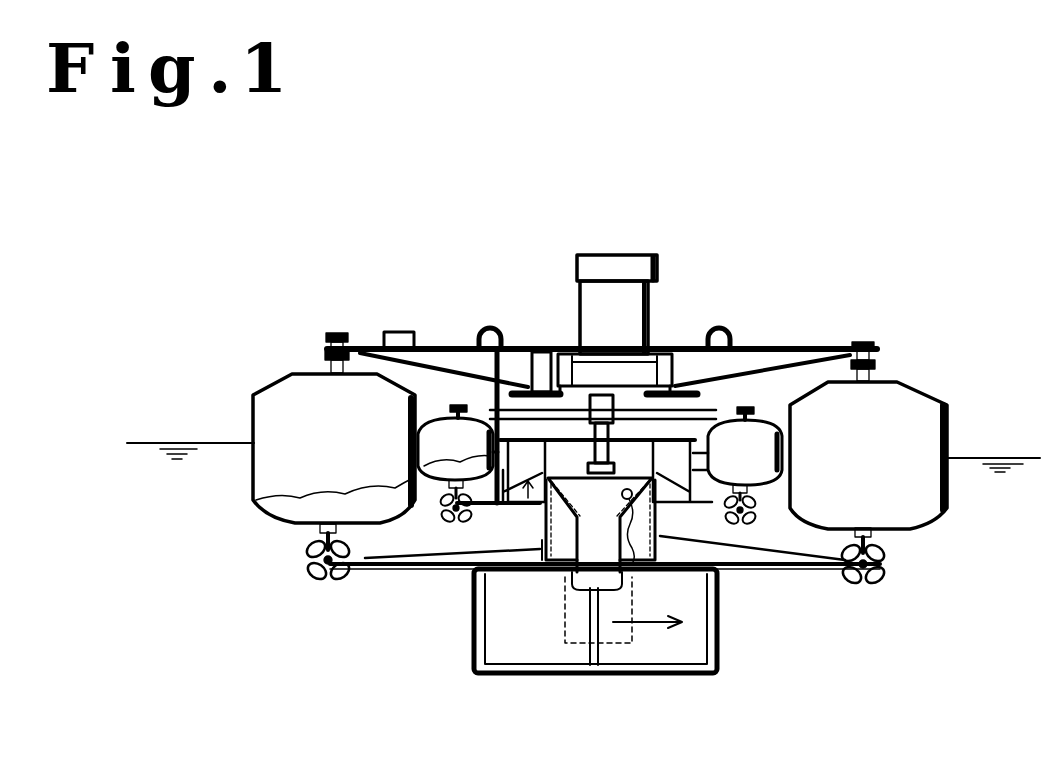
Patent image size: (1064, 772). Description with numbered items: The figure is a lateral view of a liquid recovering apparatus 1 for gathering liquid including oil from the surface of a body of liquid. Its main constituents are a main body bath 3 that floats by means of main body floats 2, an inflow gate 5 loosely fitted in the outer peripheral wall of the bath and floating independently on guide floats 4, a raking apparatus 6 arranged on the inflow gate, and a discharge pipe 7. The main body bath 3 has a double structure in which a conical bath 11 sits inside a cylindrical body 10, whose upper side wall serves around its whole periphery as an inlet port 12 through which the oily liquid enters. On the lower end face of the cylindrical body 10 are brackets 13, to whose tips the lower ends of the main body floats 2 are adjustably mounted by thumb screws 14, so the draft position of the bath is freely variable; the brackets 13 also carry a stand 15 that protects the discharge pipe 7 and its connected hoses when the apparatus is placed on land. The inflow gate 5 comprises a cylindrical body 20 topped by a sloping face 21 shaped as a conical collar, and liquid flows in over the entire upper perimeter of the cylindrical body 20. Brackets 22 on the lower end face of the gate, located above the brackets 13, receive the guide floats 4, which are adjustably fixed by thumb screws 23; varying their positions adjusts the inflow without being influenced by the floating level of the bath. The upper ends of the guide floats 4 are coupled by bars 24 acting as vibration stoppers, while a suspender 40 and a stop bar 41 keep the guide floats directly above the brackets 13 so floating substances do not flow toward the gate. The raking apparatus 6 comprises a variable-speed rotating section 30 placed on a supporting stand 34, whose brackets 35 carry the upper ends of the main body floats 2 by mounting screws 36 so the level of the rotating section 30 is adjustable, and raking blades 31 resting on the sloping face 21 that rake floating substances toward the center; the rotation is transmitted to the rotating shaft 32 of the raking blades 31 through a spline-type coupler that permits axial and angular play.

The liquid recovering apparatus 1 is at (464, 206).
The main body float 2 is at (922, 402).
The main body bath 3 is at (803, 655).
The guide float 4 is at (772, 490).
The inflow gate 5 is at (540, 552).
The raking apparatus 6 is at (562, 386).
The discharge pipe 7 is at (570, 587).
The cylindrical body 10 is at (770, 572).
The conical bath 11 is at (623, 573).
The inlet port 12 is at (714, 414).
The bracket 13 is at (387, 560).
The thumb screw 14 is at (313, 563).
The stand 15 is at (517, 672).
The cylindrical body 20 is at (504, 345).
The sloping face 21 is at (262, 505).
The bracket 22 is at (463, 552).
The thumb screw 23 is at (446, 500).
The bar 24 is at (748, 400).
The rotating section 30 is at (617, 255).
The raking blade 31 is at (433, 418).
The rotating shaft 32 is at (672, 354).
The supporting stand 34 is at (540, 351).
The bracket 35 is at (440, 346).
The mounting screw 36 is at (324, 354).
The suspender 40 is at (732, 343).
The stop bar 41 is at (446, 344).